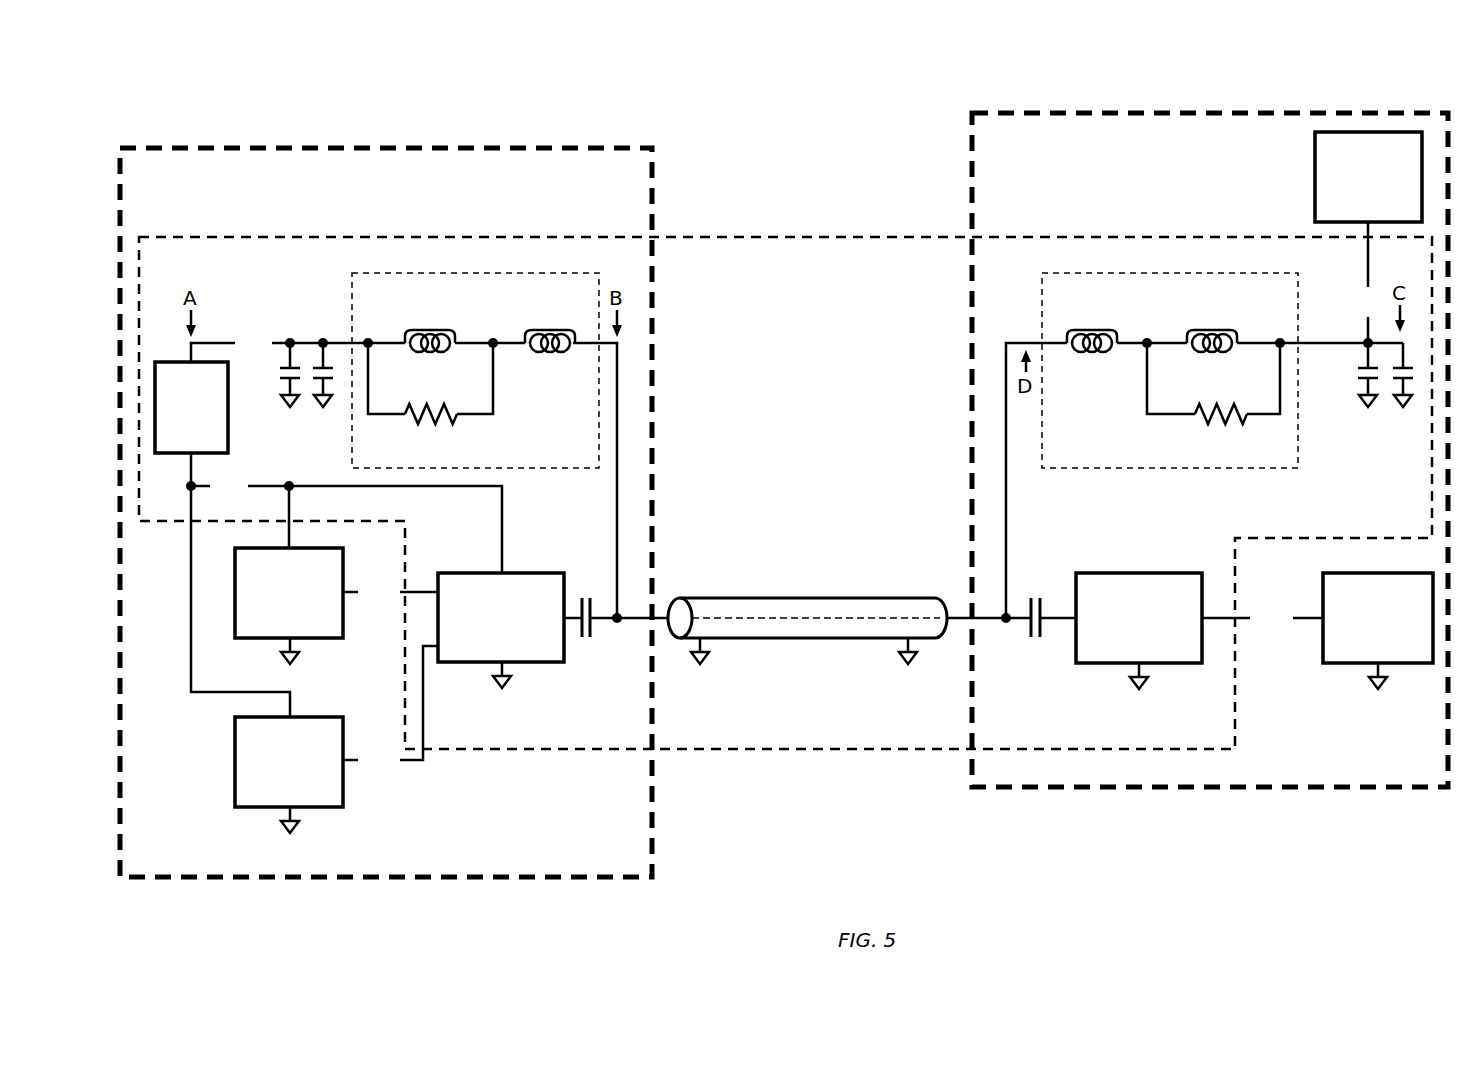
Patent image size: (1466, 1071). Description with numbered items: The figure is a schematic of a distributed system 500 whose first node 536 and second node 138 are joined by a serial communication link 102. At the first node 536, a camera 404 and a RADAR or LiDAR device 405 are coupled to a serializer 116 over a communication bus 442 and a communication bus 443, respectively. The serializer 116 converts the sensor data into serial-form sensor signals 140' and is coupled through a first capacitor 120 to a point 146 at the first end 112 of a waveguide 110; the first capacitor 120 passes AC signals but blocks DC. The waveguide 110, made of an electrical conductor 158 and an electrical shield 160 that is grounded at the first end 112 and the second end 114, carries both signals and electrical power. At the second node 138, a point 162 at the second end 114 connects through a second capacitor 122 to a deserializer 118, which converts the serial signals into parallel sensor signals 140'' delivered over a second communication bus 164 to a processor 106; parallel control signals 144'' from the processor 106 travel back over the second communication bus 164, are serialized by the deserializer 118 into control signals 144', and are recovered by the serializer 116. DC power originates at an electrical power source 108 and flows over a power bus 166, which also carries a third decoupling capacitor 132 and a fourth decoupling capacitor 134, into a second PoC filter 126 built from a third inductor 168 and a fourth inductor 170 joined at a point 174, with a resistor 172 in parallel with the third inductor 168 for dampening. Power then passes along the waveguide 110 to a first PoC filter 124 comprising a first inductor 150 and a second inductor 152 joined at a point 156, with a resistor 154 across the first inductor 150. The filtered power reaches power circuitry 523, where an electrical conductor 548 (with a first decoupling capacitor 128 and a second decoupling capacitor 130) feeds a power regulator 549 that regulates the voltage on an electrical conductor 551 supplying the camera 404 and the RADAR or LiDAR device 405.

The distributed system 500 is at (176, 60).
The first node 536 is at (386, 512).
The second node 138 is at (1210, 450).
The serial communication link 102 is at (795, 237).
The first PoC filter 124 is at (475, 370).
The second PoC filter 126 is at (1170, 370).
The electrical conductor 548 is at (404, 474).
The power circuitry 523 is at (238, 323).
The first decoupling capacitor 128 is at (282, 391).
The second decoupling capacitor 130 is at (317, 391).
The power regulator 549 is at (191, 407).
The electrical conductor 551 is at (344, 585).
The first inductor 150 is at (426, 318).
The point 156 is at (493, 339).
The second inductor 152 is at (547, 367).
The resistor 154 is at (427, 437).
The camera 404 is at (289, 606).
The communication bus 442 is at (390, 592).
The RADAR or LiDAR device 405 is at (289, 775).
The communication bus 443 is at (390, 709).
The serializer 116 is at (501, 630).
The first capacitor 120 is at (585, 650).
The point 146 is at (617, 624).
The waveguide 110 is at (802, 586).
The electrical conductor 158 is at (845, 620).
The electrical shield 160 is at (773, 640).
The first end 112 is at (681, 583).
The second end 114 is at (943, 583).
The sensor signals 140' is at (731, 529).
The control signals 144' is at (730, 716).
The point 162 is at (1006, 623).
The second capacitor 122 is at (1037, 650).
The deserializer 118 is at (1139, 631).
The second communication bus 164 is at (1262, 618).
The sensor signals 140'' is at (1280, 572).
The control signals 144'' is at (1280, 663).
The processor 106 is at (1378, 631).
The electrical power source 108 is at (1368, 177).
The power bus 166 is at (1371, 285).
The fourth inductor 170 is at (1089, 360).
The point 174 is at (1147, 339).
The third inductor 168 is at (1210, 318).
The resistor 172 is at (1221, 426).
The third decoupling capacitor 132 is at (1354, 388).
The fourth decoupling capacitor 134 is at (1391, 394).